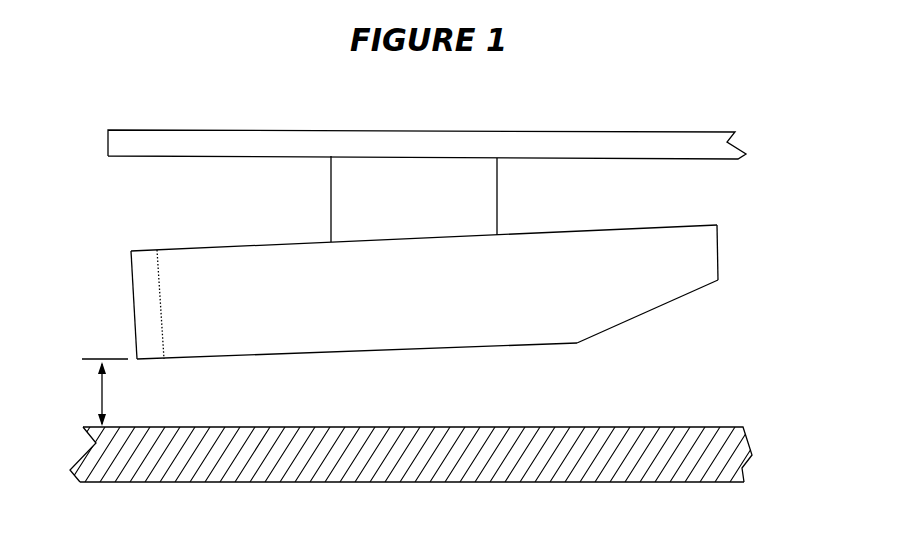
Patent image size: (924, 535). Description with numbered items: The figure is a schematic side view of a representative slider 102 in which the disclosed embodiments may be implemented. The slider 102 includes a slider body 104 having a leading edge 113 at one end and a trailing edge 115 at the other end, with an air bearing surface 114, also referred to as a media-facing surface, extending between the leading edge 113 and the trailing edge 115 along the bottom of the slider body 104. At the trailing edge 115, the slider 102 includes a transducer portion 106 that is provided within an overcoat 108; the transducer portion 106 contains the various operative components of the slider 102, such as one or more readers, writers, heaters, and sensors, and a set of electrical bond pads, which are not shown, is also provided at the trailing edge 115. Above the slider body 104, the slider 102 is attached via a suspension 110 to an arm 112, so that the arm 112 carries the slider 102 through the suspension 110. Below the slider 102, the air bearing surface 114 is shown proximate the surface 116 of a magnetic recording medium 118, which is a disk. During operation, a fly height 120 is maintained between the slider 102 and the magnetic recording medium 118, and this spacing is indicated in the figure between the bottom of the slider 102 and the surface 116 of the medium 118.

The slider 102 is at (760, 214).
The slider body 104 is at (618, 231).
The transducer portion 106 is at (160, 380).
The overcoat 108 is at (143, 296).
The suspension 110 is at (497, 193).
The arm 112 is at (668, 140).
The leading edge 113 is at (720, 257).
The air bearing surface 114 is at (447, 348).
The trailing edge 115 is at (133, 312).
The surface of magnetic recording medium 116 is at (730, 427).
The magnetic recording medium 118 is at (597, 483).
The fly height 120 is at (89, 392).